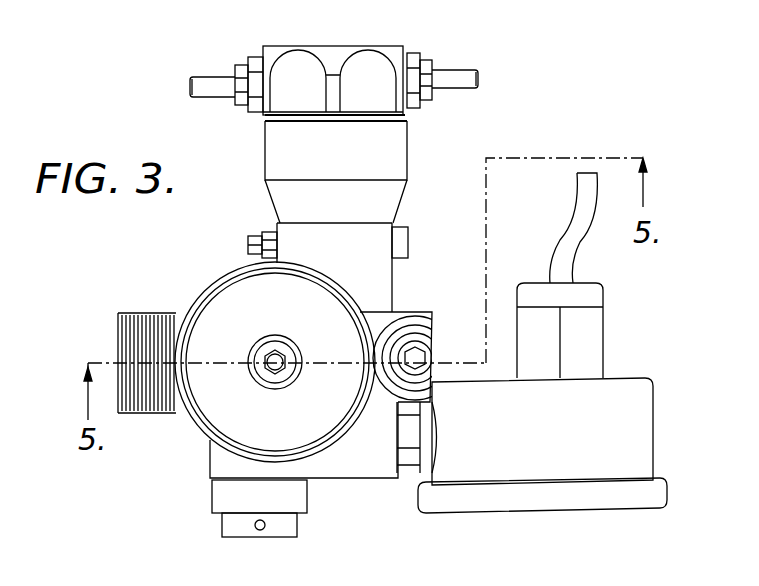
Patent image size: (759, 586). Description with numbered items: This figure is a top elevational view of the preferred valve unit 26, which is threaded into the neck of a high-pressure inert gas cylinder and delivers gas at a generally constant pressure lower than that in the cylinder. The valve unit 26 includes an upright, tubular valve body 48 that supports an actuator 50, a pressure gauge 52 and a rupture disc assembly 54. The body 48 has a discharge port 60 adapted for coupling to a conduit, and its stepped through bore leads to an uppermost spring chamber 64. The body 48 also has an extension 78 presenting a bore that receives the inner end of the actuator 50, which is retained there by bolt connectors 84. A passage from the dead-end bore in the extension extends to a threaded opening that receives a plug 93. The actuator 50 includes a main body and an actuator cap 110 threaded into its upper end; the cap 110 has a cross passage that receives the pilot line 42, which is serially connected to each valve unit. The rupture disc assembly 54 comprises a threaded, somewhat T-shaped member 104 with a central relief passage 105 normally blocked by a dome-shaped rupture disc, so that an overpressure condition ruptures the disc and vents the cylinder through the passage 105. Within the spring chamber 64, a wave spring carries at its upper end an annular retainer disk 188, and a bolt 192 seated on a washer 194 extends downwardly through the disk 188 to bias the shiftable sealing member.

The valve unit 26 is at (524, 112).
The pilot line 42 is at (460, 75).
The valve body 48 is at (184, 422).
The actuator 50 is at (252, 44).
The pressure gauge 52 is at (643, 437).
The rupture disc assembly 54 is at (302, 539).
The discharge port 60 is at (125, 312).
The spring chamber 64 is at (330, 440).
The extension 78 is at (372, 230).
The bolt connectors 84 is at (268, 232).
The plug 93 is at (432, 355).
The T-shaped member 104 is at (228, 538).
The relief passage 105 is at (258, 531).
The actuator cap 110 is at (378, 58).
The annular retainer disk 188 is at (250, 428).
The bolt 192 is at (262, 378).
The washer 194 is at (273, 339).